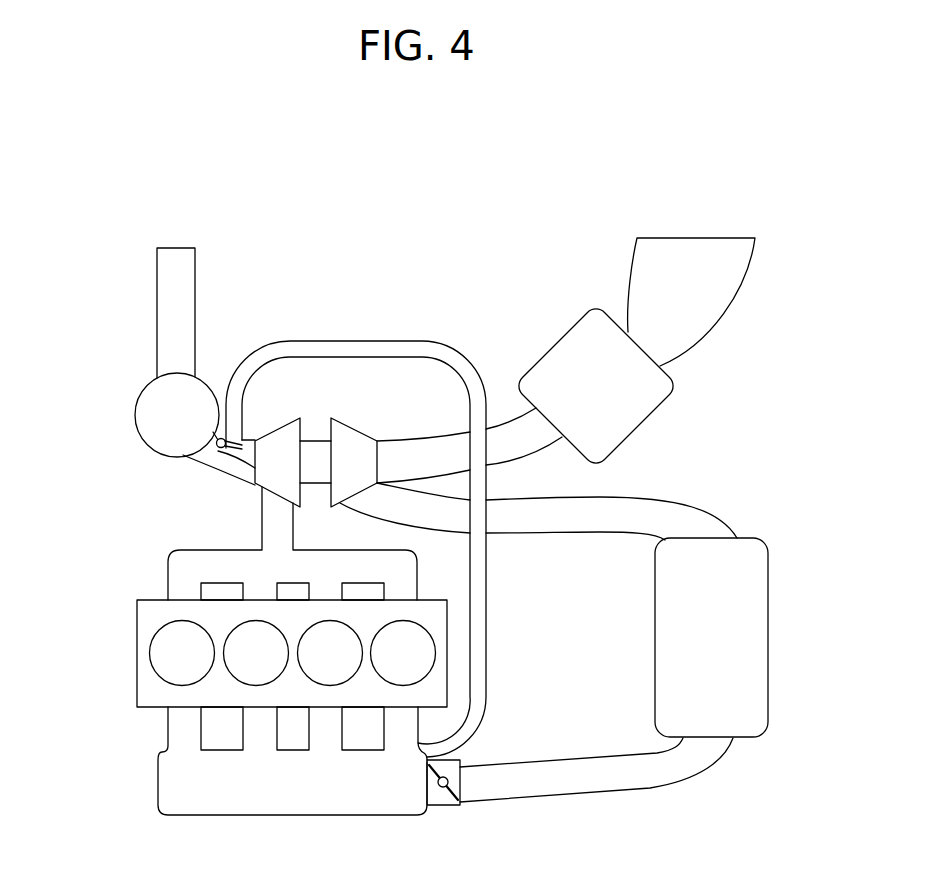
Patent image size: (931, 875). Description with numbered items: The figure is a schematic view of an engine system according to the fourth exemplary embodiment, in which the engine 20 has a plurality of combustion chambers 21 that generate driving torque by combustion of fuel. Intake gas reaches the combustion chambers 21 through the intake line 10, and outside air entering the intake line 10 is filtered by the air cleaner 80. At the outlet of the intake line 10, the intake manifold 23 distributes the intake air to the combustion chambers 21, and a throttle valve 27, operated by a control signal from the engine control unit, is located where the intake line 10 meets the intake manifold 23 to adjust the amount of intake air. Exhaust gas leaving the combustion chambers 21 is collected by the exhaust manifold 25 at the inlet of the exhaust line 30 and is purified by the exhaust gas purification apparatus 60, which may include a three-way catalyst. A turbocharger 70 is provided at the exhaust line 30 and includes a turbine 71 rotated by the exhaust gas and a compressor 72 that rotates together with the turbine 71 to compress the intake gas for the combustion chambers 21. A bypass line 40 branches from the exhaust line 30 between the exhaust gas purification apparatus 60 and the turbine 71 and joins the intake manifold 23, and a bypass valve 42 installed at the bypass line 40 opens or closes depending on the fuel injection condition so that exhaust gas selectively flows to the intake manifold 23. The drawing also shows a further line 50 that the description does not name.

The intake line 10 is at (562, 795).
The engine 20 is at (243, 677).
The combustion chambers 21 is at (150, 653).
The intake manifold 23 is at (293, 816).
The exhaust manifold 25 is at (168, 560).
The throttle valve 27 is at (443, 806).
The exhaust line 30 is at (157, 308).
The bypass line 40 is at (430, 348).
The bypass valve 42 is at (218, 451).
The exhaust line 50 is at (502, 422).
The exhaust gas purification apparatus 60 is at (135, 415).
The turbocharger 70 is at (326, 369).
The turbine 71 is at (290, 427).
The compressor 72 is at (347, 427).
The air cleaner 80 is at (681, 386).